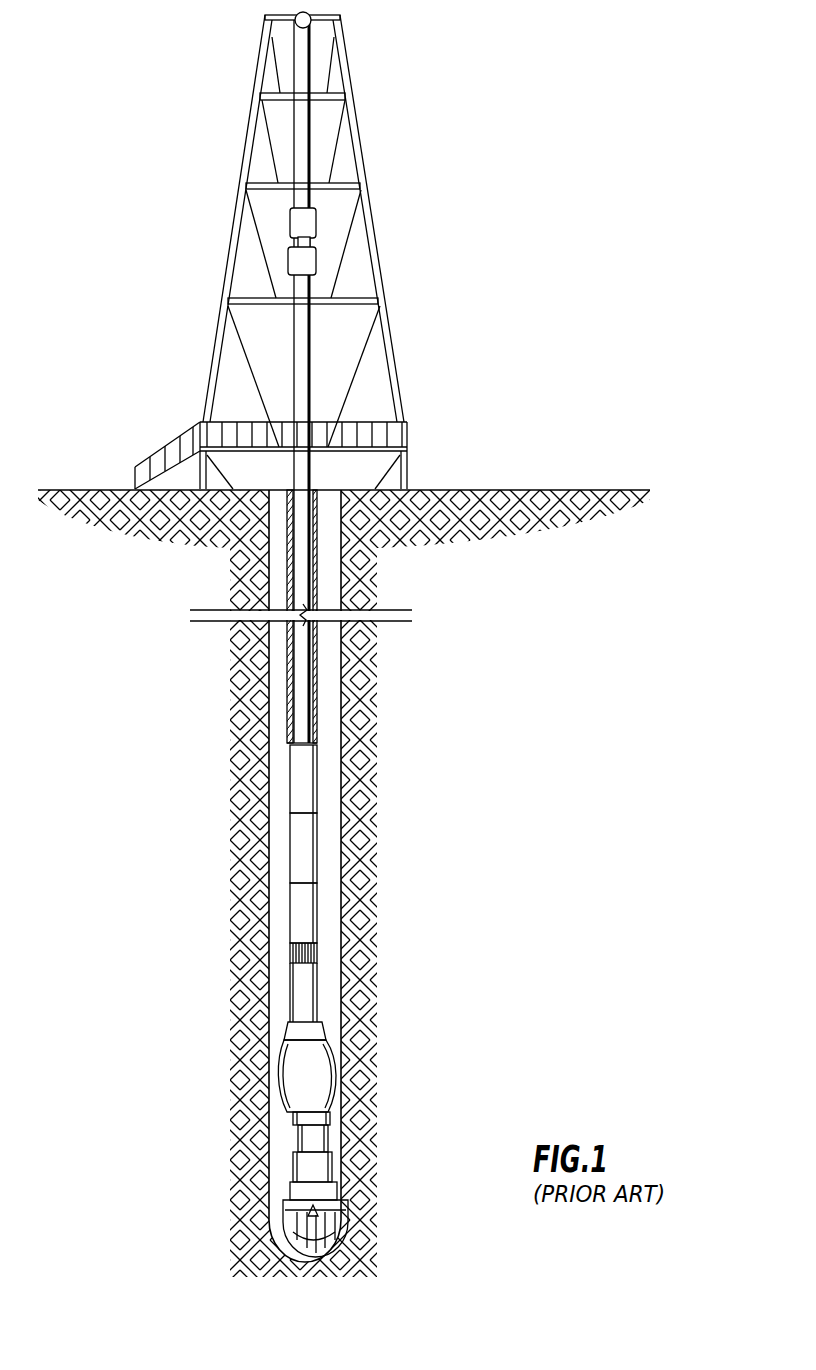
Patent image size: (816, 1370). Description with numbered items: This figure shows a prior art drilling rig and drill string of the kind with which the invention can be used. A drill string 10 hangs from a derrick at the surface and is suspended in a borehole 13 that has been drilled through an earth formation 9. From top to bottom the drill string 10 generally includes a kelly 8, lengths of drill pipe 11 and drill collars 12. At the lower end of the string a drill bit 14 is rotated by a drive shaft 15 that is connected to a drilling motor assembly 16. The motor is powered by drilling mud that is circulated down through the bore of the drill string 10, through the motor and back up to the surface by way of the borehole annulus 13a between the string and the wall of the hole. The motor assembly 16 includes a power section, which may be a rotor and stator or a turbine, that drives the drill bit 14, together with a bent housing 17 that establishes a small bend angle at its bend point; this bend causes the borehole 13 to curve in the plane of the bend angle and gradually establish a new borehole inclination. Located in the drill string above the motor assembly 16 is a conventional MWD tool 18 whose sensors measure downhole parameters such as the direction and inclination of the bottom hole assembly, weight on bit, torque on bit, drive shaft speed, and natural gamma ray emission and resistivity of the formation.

The kelly 8 is at (311, 366).
The earth formation 9 is at (563, 598).
The drill string 10 is at (285, 669).
The drill pipe 11 is at (317, 579).
The drill collars 12 is at (317, 713).
The borehole 13 is at (342, 666).
The borehole annulus 13a is at (278, 720).
The drill bit 14 is at (337, 1250).
The drive shaft 15 is at (328, 1145).
The drilling motor assembly 16 is at (318, 830).
The bent housing 17 is at (288, 952).
The MWD tool 18 is at (318, 791).